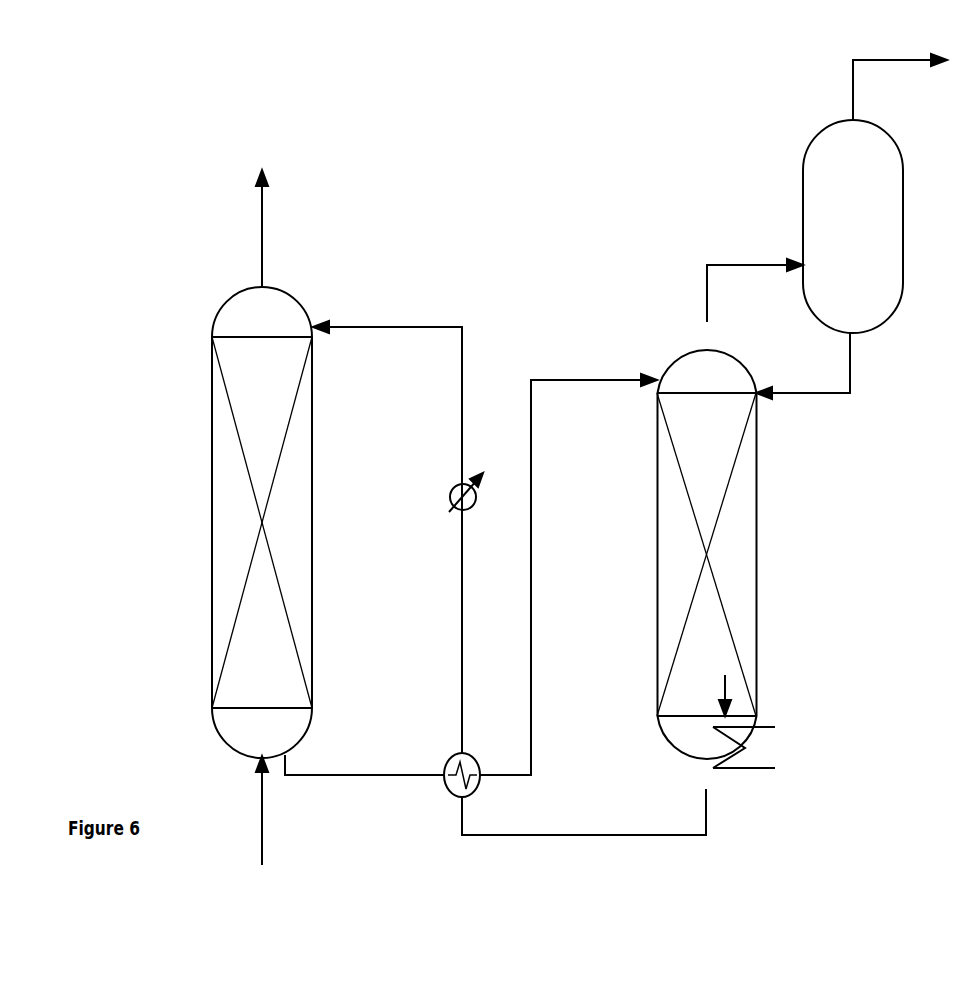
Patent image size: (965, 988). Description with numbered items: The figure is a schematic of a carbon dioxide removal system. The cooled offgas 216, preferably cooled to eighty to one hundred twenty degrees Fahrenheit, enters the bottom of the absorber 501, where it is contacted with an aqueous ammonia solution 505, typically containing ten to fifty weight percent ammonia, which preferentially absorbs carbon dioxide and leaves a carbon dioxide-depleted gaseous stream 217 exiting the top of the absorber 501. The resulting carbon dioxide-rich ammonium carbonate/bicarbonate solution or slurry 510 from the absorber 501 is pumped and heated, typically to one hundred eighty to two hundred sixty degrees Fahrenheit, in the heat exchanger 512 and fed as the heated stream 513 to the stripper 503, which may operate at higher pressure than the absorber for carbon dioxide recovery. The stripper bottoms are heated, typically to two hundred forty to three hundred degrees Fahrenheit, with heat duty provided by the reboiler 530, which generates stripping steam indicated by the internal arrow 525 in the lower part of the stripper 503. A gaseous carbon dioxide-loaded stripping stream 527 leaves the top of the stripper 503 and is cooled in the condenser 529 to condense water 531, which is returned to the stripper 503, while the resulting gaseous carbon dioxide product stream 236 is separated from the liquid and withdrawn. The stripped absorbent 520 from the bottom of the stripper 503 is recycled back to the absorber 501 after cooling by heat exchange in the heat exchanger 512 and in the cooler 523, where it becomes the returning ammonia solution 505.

The absorber 501 is at (205, 477).
The carbon dioxide-depleted gaseous stream 217 is at (279, 228).
The cooled offgas 216 is at (279, 810).
The carbon dioxide-rich ammonium carbonate/bicarbonate solution or slurry 510 is at (364, 755).
The heat exchanger 512 is at (445, 786).
The aqueous ammonia solution 505 is at (387, 516).
The cooler 523 is at (448, 492).
The heated stream 513 is at (568, 560).
The stripped absorbent 520 is at (584, 812).
The stripper 503 is at (658, 493).
The internal flow arrow in second column 525 is at (709, 693).
The reboiler 530 is at (767, 743).
The gaseous carbon dioxide-loaded stripping stream 527 is at (755, 290).
The condenser 529 is at (853, 226).
The condensed water 531 is at (803, 366).
The gaseous carbon dioxide product stream 236 is at (900, 78).